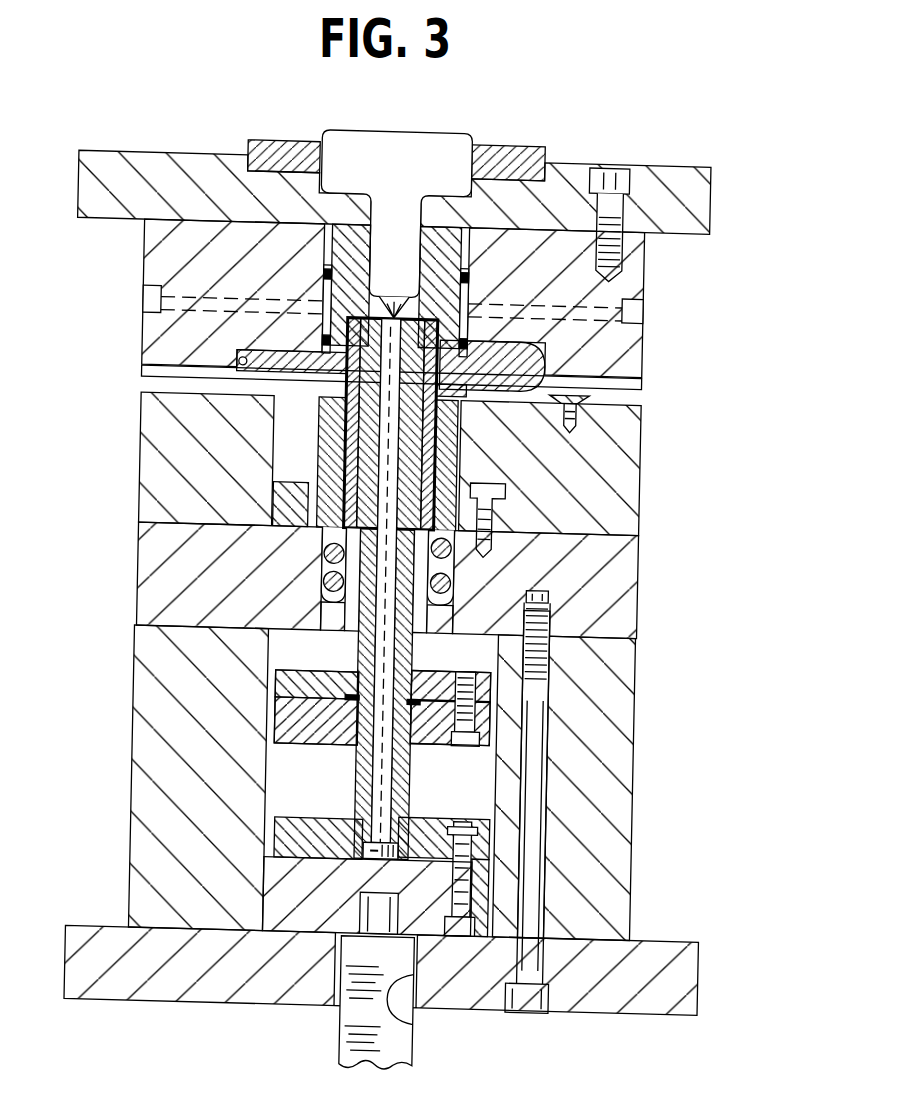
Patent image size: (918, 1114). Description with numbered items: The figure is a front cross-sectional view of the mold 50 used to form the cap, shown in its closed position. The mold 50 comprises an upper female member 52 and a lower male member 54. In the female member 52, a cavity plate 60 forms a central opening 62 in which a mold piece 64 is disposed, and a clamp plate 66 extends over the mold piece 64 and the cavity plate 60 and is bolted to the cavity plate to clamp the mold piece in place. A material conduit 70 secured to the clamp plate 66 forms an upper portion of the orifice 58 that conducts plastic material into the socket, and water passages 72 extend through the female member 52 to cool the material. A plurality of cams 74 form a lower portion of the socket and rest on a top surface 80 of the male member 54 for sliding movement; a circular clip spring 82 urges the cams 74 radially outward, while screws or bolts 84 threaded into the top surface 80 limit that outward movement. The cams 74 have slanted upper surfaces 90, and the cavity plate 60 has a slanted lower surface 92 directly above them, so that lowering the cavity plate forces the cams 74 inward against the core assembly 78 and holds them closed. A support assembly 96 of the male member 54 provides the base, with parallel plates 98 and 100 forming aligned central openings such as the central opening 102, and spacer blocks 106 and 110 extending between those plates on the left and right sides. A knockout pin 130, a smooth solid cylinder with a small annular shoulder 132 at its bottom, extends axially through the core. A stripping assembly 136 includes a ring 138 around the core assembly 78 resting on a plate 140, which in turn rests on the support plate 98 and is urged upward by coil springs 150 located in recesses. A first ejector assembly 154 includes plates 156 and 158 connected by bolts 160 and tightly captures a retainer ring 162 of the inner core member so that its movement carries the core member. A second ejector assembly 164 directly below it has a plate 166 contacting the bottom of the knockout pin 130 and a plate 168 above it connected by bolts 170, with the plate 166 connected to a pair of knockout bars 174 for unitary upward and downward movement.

The mold 50 is at (254, 94).
The female member 52 is at (627, 146).
The male member 54 is at (131, 795).
The orifice 58 is at (385, 292).
The cavity plate 60 is at (612, 250).
The central opening 62 is at (472, 210).
The mold piece 64 is at (330, 236).
The clamp plate 66 is at (690, 196).
The material conduit 70 is at (400, 140).
The water passages 72 is at (142, 296).
The cams 74 is at (345, 325).
The core assembly 78 is at (345, 532).
The top surface 80 is at (642, 371).
The spring 82 is at (470, 388).
The screws or bolts 84 is at (580, 405).
The upper surfaces 90 is at (250, 370).
The lower surface 92 is at (535, 362).
The support assembly 96 is at (648, 715).
The plate 98 is at (422, 590).
The plate 100 is at (668, 927).
The central opening 102 is at (412, 1012).
The spacer block 106 is at (160, 698).
The spacer block 110 is at (615, 835).
The knockout pin 130 is at (383, 790).
The annular shoulder 132 is at (373, 843).
The stripping assembly 136 is at (139, 480).
The ring 138 is at (330, 414).
The plate 140 is at (612, 492).
The springs 150 is at (328, 578).
The first ejector assembly 154 is at (310, 742).
The plate 156 is at (338, 670).
The plate 158 is at (332, 740).
The bolts 160 is at (472, 738).
The retainer ring 162 is at (430, 682).
The second ejector assembly 164 is at (436, 815).
The plate 166 is at (336, 918).
The plate 168 is at (330, 825).
The bolts 170 is at (470, 812).
The knockout bars 174 is at (408, 1040).